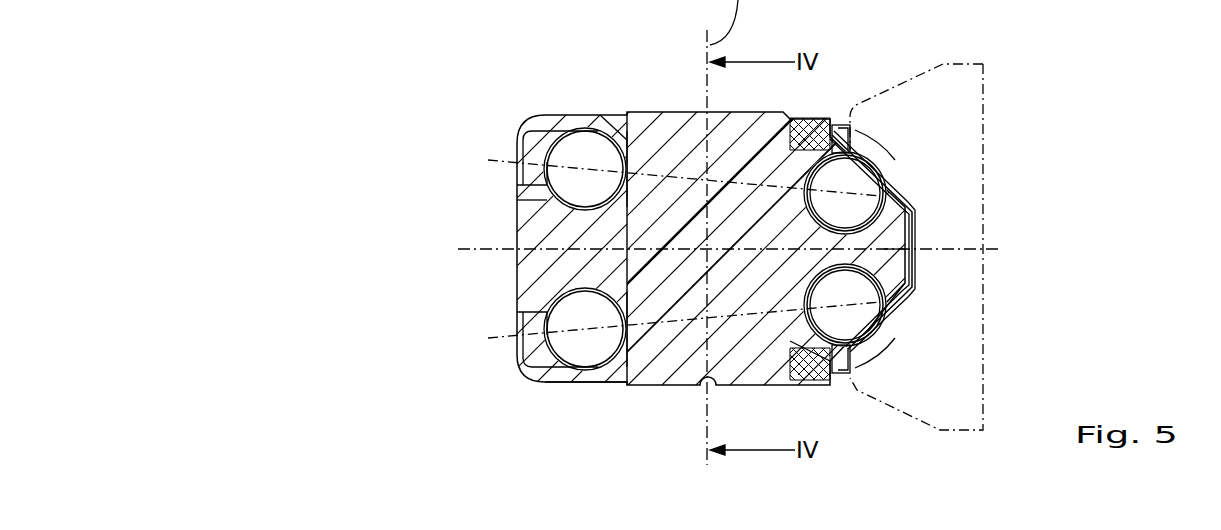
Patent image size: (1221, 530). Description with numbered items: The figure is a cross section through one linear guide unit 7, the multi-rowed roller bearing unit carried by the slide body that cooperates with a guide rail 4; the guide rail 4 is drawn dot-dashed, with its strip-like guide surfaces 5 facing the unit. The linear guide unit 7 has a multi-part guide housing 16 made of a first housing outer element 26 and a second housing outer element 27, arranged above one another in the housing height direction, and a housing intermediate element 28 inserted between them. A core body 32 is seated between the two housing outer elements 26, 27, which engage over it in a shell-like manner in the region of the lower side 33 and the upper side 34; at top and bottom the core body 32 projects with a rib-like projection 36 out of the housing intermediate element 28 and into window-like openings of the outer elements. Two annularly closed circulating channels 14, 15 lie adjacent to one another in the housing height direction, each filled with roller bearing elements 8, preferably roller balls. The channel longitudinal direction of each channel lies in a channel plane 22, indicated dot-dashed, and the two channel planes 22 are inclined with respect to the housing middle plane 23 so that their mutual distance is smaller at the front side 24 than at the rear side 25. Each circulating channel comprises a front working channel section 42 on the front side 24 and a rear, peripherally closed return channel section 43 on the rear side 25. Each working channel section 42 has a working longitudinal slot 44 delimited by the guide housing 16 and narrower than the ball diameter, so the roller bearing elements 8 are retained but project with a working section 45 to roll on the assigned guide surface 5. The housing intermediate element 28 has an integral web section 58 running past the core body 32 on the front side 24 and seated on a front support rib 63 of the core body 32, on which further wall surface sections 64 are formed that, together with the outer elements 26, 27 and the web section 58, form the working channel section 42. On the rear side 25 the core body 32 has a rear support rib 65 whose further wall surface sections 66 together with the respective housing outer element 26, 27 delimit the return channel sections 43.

The guide rail 4 is at (970, 363).
The guide surface 5 is at (870, 180).
The linear guide unit 7 is at (530, 100).
The roller bearing element 8 is at (580, 147).
The circulating channel 14 is at (517, 313).
The circulating channel 15 is at (530, 183).
The guide housing 16 is at (519, 352).
The channel plane 22 is at (655, 140).
The housing middle plane 23 is at (470, 248).
The front side 24 is at (930, 225).
The rear side 25 is at (485, 271).
The first housing outer element 26 is at (618, 372).
The second housing outer element 27 is at (608, 123).
The housing intermediate element 28 is at (912, 207).
The core body 32 is at (735, 157).
The lower side 33 is at (695, 393).
The upper side 34 is at (691, 97).
The rib-like projection 36 is at (640, 140).
The working channel section 42 is at (836, 122).
The return channel section 43 is at (550, 143).
The working longitudinal slot 44 is at (863, 158).
The working section 45 is at (870, 178).
The web section 58 is at (912, 245).
The front support rib 63 is at (912, 262).
The further wall surface section 64 is at (828, 288).
The rear support rib 65 is at (530, 215).
The further wall surface section 66 is at (592, 195).